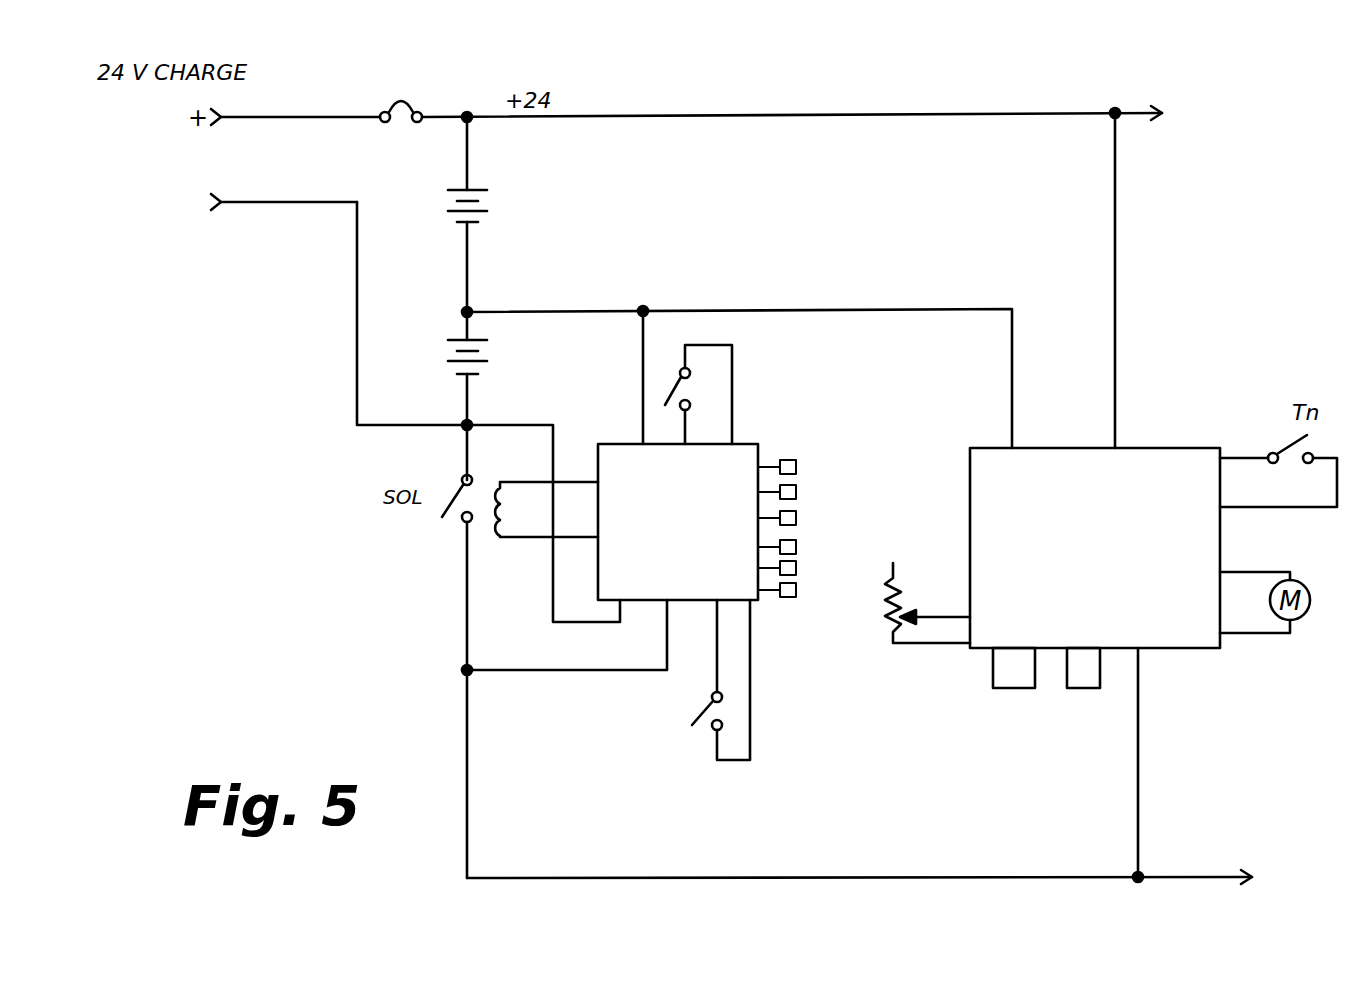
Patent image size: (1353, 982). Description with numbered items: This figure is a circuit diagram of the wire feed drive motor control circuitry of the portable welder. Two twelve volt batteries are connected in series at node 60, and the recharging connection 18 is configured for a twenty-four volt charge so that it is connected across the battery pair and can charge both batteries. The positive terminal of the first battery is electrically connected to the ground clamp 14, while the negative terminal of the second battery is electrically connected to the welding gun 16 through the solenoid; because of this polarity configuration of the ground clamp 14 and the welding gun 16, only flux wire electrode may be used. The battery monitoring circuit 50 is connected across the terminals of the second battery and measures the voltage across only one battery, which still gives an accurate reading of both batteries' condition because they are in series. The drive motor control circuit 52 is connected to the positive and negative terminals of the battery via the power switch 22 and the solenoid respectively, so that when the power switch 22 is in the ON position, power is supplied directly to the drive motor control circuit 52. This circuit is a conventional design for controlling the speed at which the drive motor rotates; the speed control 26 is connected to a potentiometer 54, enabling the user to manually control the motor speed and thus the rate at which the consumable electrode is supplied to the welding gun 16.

The ground clamp 14 is at (1173, 100).
The welding gun 16 is at (1287, 855).
The recharging connection 18 is at (305, 160).
The power switch 22 is at (688, 727).
The speed control 26 is at (673, 383).
The battery monitoring circuit 50 is at (723, 460).
The drive motor control circuit 52 is at (1185, 643).
The potentiometer 54 is at (890, 606).
The node 60 is at (470, 308).